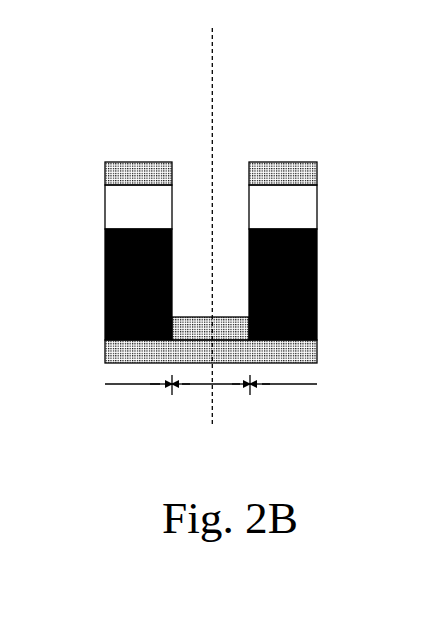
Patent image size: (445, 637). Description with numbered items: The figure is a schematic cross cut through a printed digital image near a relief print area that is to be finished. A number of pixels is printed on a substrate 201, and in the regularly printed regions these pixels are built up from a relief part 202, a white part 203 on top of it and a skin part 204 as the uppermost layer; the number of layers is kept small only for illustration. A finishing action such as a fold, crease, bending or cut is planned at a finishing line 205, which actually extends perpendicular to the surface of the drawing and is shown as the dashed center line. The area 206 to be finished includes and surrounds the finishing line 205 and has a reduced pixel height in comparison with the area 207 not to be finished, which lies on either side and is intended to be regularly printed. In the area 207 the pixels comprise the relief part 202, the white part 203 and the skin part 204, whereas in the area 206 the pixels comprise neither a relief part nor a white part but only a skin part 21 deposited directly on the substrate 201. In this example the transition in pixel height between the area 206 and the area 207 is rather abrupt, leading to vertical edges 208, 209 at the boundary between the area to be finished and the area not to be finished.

The substrate 201 is at (305, 348).
The relief part 202 is at (317, 268).
The white part 203 is at (305, 215).
The skin part 204 is at (305, 169).
The finishing line 205 is at (212, 39).
The area to be finished 206 is at (227, 388).
The area not to be finished 207 is at (130, 388).
The vertical edge 208 is at (171, 150).
The vertical edge 209 is at (250, 152).
The skin part 21 is at (232, 316).